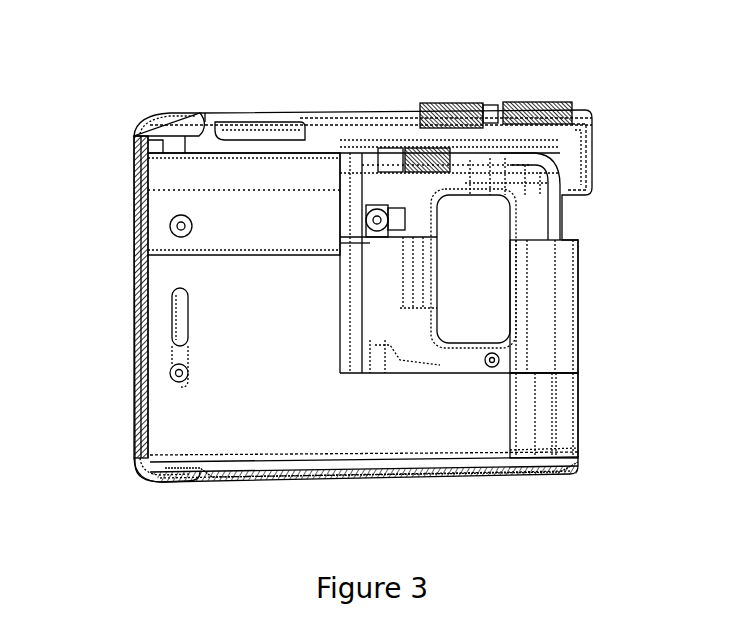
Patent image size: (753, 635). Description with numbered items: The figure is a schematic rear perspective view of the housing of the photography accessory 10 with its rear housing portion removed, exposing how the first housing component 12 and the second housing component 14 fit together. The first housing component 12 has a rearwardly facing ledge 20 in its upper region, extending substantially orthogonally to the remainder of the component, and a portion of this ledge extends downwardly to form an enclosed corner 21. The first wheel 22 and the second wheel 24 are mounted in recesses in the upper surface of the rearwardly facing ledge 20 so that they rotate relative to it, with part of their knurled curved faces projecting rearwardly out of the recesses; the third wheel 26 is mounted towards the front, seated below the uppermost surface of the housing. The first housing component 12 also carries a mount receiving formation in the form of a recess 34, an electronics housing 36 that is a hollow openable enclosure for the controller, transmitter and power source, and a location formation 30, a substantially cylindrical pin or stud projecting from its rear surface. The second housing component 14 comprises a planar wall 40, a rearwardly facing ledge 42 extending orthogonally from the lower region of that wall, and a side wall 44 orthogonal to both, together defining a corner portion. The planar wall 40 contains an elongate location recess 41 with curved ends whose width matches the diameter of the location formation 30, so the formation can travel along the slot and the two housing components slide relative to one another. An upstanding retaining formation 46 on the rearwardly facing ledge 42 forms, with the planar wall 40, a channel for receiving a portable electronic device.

The photography accessory 10 is at (128, 85).
The first housing component 12 is at (134, 226).
The second housing component 14 is at (213, 486).
The rearwardly facing ledge 20 is at (170, 155).
The enclosed corner 21 is at (565, 153).
The first wheel 22 is at (538, 100).
The second wheel 24 is at (447, 108).
The third wheel 26 is at (422, 157).
The location formation 30 is at (175, 380).
The recess 34 is at (243, 122).
The electronics housing 36 is at (498, 272).
The planar wall 40 is at (162, 278).
The location recess 41 is at (180, 325).
The rearwardly facing ledge 42 is at (160, 469).
The side wall 44 is at (547, 408).
The upstanding retaining formation 46 is at (330, 468).